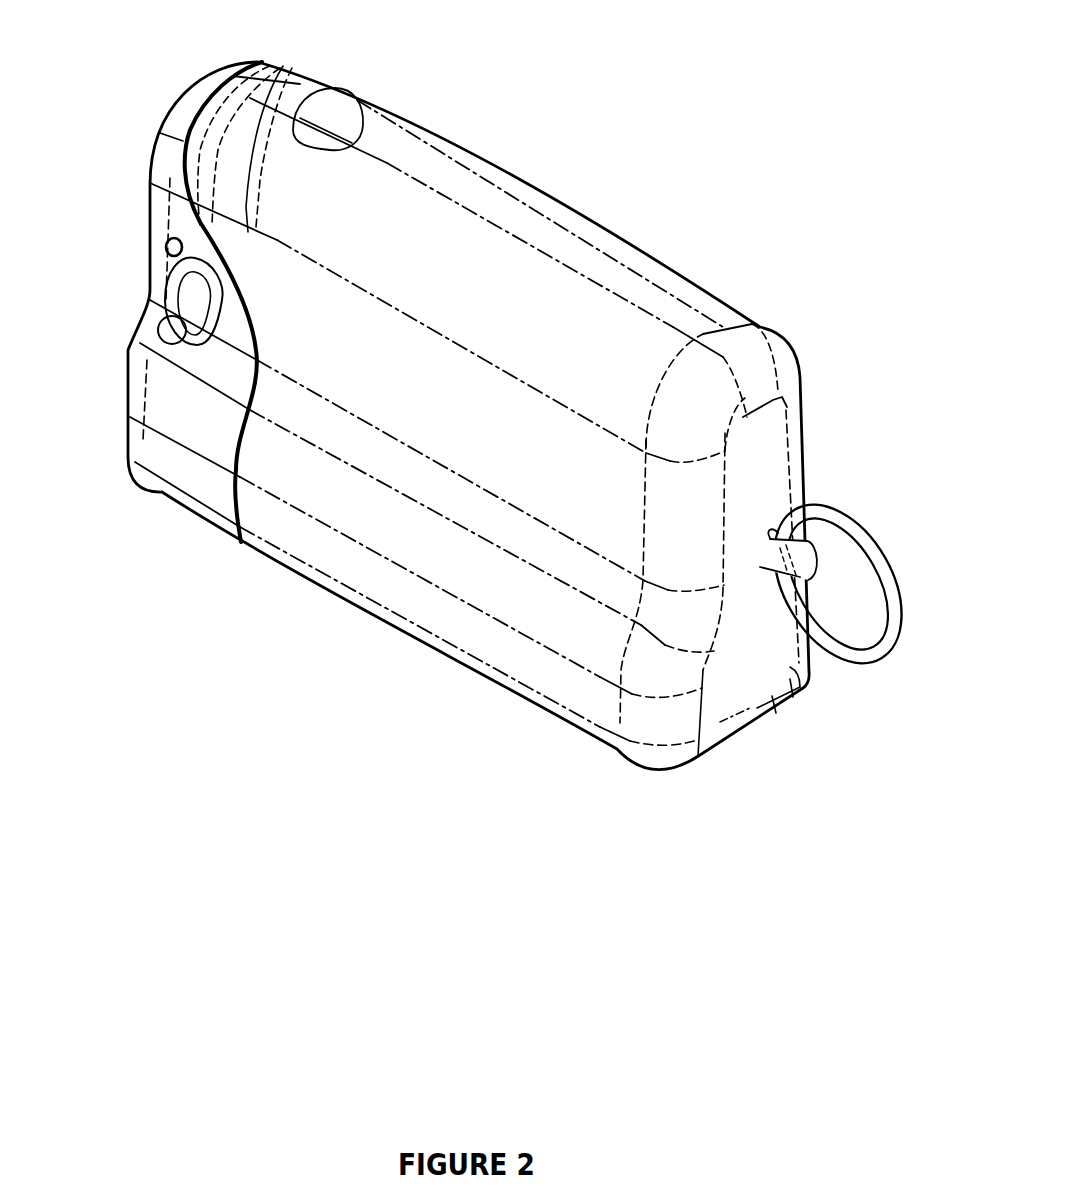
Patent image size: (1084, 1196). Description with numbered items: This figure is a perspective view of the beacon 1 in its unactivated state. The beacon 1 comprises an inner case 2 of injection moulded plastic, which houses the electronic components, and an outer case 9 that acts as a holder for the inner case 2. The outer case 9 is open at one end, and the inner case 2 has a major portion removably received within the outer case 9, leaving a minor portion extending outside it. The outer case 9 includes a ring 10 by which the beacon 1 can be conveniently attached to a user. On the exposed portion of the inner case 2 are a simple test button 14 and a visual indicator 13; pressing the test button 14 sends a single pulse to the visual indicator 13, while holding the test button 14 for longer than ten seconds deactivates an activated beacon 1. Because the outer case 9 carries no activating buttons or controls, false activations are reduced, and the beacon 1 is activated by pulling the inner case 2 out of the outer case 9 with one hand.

The beacon 1 is at (688, 131).
The inner case 2 is at (207, 523).
The outer case 9 is at (503, 690).
The ring 10 is at (895, 577).
The visual indicator 13 is at (160, 332).
The test button 14 is at (165, 248).